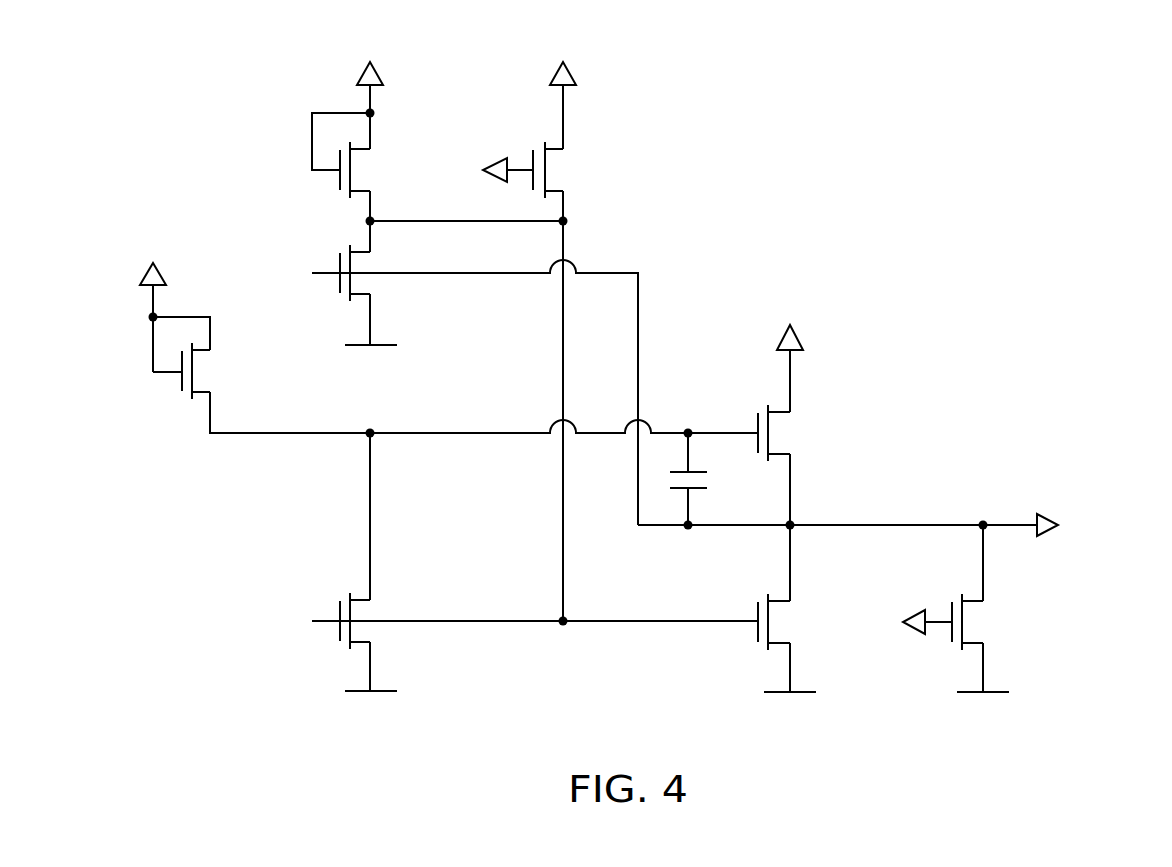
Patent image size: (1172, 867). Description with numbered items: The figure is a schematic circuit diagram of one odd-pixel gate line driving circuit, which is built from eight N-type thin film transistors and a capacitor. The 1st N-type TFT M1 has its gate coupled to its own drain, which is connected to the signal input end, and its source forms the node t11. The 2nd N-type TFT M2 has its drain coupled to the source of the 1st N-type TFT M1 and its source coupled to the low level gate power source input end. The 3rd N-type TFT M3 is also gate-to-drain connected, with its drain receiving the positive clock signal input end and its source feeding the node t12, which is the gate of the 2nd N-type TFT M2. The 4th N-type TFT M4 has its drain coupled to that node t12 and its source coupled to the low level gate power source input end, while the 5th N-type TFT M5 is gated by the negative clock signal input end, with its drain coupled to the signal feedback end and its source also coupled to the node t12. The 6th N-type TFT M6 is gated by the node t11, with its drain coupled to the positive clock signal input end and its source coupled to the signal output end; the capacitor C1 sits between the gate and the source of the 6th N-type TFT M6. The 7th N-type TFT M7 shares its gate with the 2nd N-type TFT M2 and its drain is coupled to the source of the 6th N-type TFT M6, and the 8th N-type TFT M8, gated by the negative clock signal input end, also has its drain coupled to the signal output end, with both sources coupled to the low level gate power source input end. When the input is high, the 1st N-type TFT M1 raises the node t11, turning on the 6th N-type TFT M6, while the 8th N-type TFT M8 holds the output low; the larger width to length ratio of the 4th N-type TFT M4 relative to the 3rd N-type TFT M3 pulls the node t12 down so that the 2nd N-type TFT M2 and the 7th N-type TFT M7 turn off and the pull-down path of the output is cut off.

The 1st N-type TFT M1 is at (261, 375).
The 2nd N-type TFT M2 is at (535, 582).
The 3rd N-type TFT M3 is at (355, 167).
The 4th N-type TFT M4 is at (475, 373).
The 5th N-type TFT M5 is at (514, 381).
The 6th N-type TFT M6 is at (788, 444).
The 7th N-type TFT M7 is at (788, 663).
The 8th N-type TFT M8 is at (935, 629).
The capacitor C1 is at (701, 479).
The node t11 is at (562, 443).
The node t12 is at (565, 638).